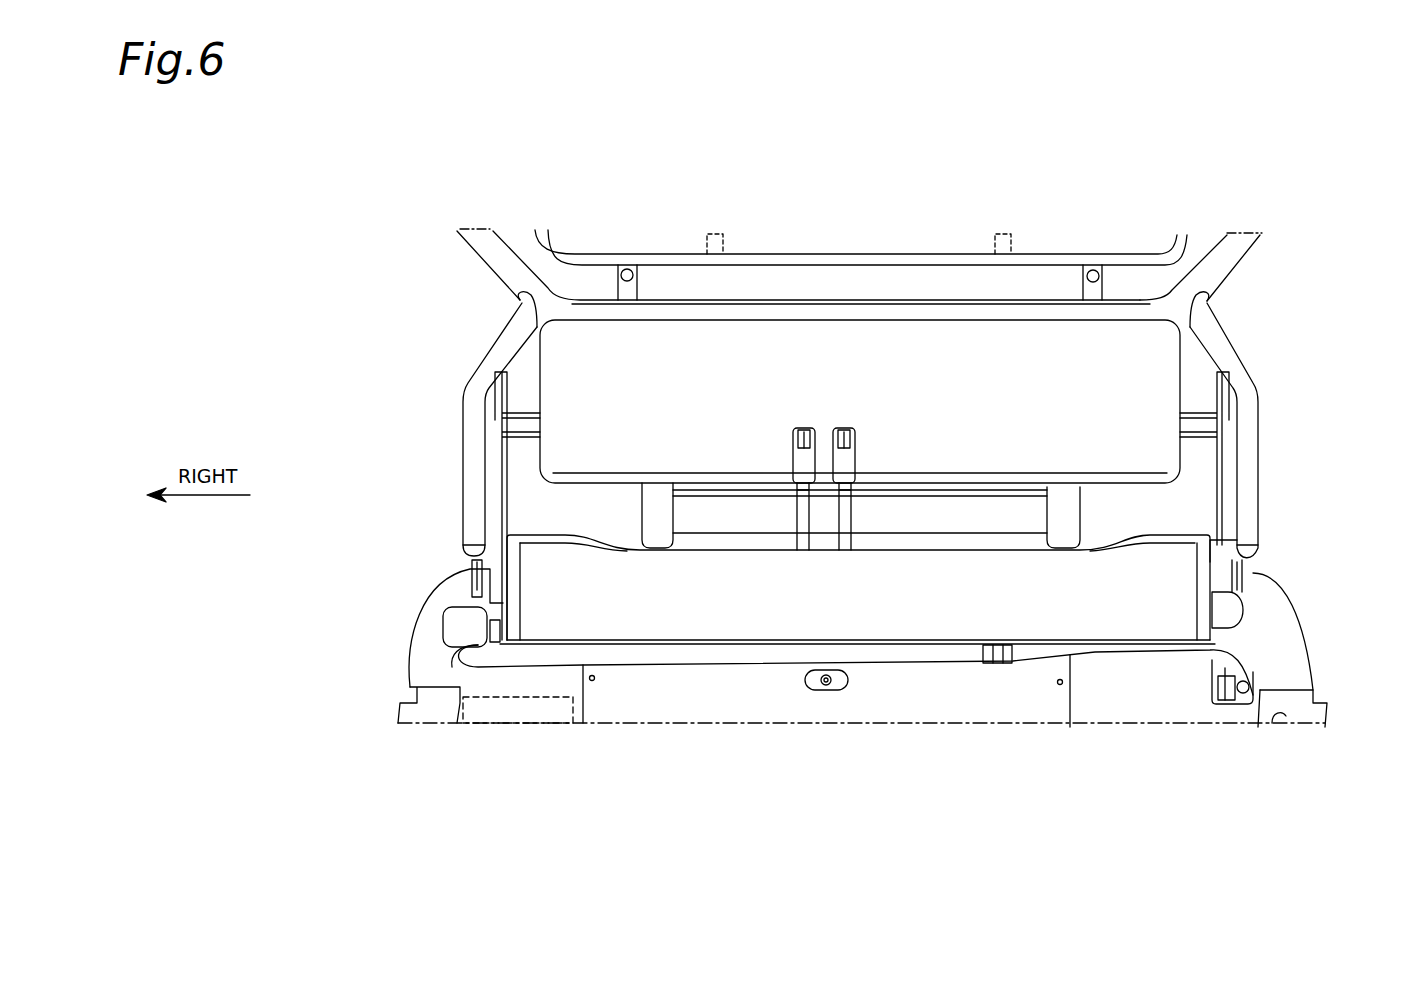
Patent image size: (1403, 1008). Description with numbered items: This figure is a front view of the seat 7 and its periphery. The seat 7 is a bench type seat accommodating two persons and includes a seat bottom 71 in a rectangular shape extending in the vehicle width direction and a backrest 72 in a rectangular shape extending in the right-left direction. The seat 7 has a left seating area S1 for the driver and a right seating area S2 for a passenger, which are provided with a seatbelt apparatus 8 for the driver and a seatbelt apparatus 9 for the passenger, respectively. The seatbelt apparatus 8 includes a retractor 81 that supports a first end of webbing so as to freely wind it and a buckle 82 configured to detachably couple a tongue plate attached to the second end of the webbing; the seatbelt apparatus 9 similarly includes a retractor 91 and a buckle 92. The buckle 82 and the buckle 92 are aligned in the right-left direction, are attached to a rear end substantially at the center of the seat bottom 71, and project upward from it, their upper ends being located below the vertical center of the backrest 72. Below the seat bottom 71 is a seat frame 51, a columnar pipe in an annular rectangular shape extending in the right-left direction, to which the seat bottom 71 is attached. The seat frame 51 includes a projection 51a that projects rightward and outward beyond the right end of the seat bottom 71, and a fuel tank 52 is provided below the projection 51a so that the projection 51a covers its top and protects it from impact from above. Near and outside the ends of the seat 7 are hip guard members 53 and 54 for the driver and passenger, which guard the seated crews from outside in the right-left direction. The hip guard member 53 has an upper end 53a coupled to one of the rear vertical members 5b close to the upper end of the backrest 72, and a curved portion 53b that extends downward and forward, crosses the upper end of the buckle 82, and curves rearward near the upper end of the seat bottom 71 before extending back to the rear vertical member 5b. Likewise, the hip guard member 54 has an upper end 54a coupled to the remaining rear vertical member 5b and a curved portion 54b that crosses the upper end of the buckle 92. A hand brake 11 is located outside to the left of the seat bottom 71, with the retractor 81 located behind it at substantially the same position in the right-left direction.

The rear vertical member 5b is at (490, 256).
The upper end 54a is at (517, 300).
The upper end 53a is at (1208, 303).
The hip guard member 54 is at (447, 393).
The hip guard member 53 is at (1275, 400).
The curved portion 54b is at (473, 543).
The curved portion 53b is at (1246, 553).
The backrest 72 is at (818, 362).
The buckle 92 is at (800, 428).
The buckle 82 is at (844, 428).
The seat bottom 71 is at (757, 600).
The seat 7 is at (1108, 660).
The seatbelt apparatus 9 is at (432, 605).
The seatbelt apparatus 8 is at (1266, 596).
The retractor 91 is at (465, 626).
The retractor 81 is at (1226, 612).
The seat frame 51 is at (603, 648).
The projection 51a is at (452, 670).
The fuel tank 52 is at (517, 710).
The hand brake 11 is at (1237, 703).
The left seating area S1 is at (990, 596).
The right seating area S2 is at (678, 596).